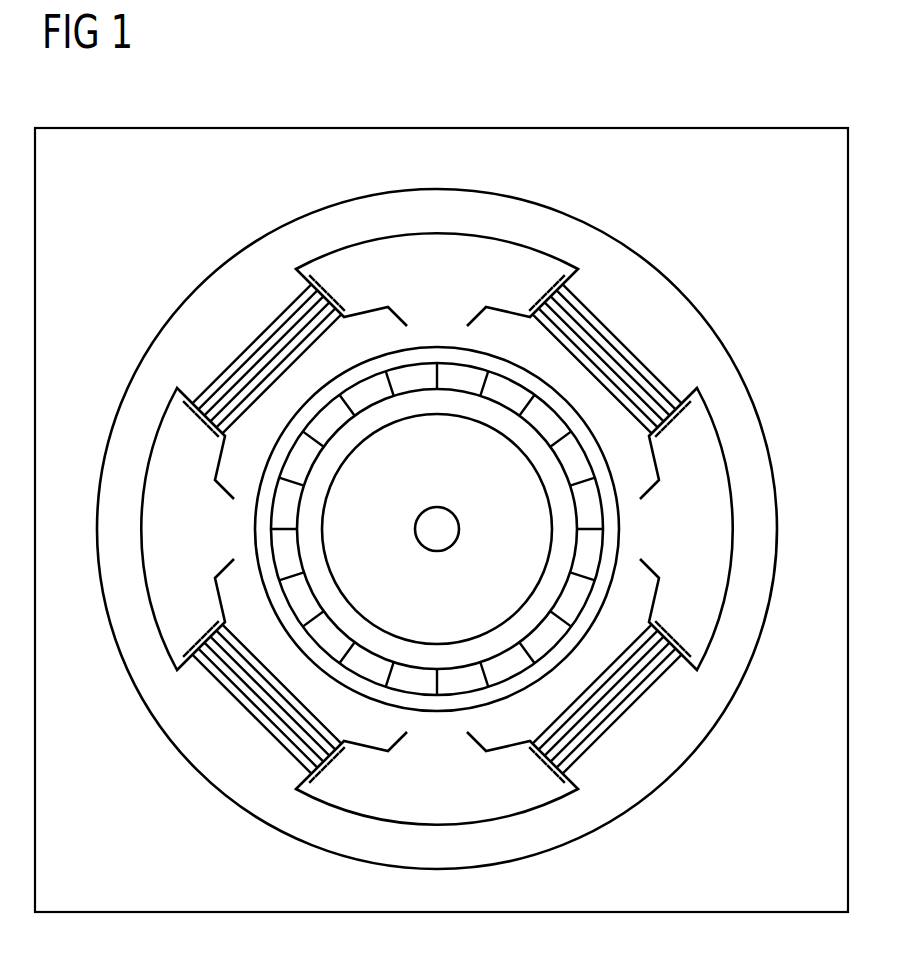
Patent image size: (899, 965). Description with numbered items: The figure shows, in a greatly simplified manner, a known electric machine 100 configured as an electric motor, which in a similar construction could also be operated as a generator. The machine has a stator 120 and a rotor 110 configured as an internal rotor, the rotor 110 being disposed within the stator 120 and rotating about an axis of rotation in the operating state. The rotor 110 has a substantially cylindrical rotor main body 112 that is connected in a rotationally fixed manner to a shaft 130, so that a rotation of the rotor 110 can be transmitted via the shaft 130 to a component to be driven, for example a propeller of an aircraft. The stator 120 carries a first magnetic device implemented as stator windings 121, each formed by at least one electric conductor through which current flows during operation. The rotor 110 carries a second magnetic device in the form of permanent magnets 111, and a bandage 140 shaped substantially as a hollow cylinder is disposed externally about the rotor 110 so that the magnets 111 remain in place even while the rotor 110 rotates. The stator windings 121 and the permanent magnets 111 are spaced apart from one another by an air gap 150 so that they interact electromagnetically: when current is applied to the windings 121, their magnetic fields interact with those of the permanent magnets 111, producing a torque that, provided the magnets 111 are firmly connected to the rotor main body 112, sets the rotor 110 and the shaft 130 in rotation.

The electric machine 100 is at (725, 96).
The rotor 110 is at (520, 566).
The permanent magnets 111 is at (370, 395).
The rotor main body 112 is at (315, 551).
The stator 120 is at (543, 237).
The stator windings 121 is at (262, 347).
The shaft 130 is at (427, 525).
The bandage 140 is at (256, 525).
The air gap 150 is at (460, 342).